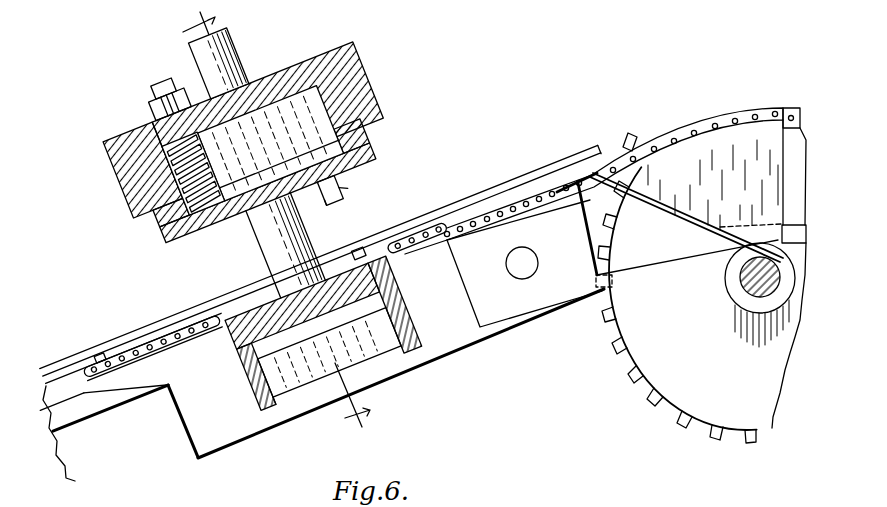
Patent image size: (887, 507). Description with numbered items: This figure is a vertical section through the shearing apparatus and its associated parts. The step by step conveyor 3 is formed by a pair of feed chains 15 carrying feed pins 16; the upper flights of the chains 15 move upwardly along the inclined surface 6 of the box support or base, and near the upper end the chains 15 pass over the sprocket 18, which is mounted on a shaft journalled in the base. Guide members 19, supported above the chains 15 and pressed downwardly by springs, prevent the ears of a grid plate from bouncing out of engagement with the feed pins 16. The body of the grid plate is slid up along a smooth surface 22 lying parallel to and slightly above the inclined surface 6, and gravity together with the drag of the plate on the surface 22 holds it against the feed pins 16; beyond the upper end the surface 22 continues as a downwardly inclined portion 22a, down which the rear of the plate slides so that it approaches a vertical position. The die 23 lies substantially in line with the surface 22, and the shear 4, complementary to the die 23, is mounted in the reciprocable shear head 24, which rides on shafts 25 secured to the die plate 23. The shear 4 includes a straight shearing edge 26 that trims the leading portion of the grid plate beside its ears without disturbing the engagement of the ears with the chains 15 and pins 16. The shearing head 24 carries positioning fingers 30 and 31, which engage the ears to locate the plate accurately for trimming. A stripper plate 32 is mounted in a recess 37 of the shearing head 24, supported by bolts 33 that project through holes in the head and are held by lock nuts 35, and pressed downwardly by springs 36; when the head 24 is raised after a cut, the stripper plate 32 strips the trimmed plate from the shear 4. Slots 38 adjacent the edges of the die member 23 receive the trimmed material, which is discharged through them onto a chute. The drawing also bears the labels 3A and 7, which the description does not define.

The step by step conveyor 3 is at (494, 220).
The bearing support body 3A is at (163, 118).
The shear 4 is at (354, 140).
The inclined surface 6 is at (95, 414).
The section line 7 is at (279, 221).
The feed chains 15 is at (210, 348).
The feed pins 16 is at (106, 357).
The sprocket 18 is at (714, 402).
The guide members 19 is at (182, 313).
The smooth surface 22 is at (551, 191).
The downwardly inclined portion 22a is at (672, 214).
The die 23 is at (238, 320).
The shear head 24 is at (366, 92).
The shafts 25 is at (262, 234).
The straight shearing edge 26 is at (360, 160).
The positioning finger 30 is at (340, 192).
The positioning finger 31 is at (350, 202).
The stripper plate 32 is at (318, 193).
The bolts 33 is at (169, 86).
The lock nuts 35 is at (152, 99).
The springs 36 is at (128, 196).
The recess 37 is at (312, 100).
The slots 38 is at (199, 410).